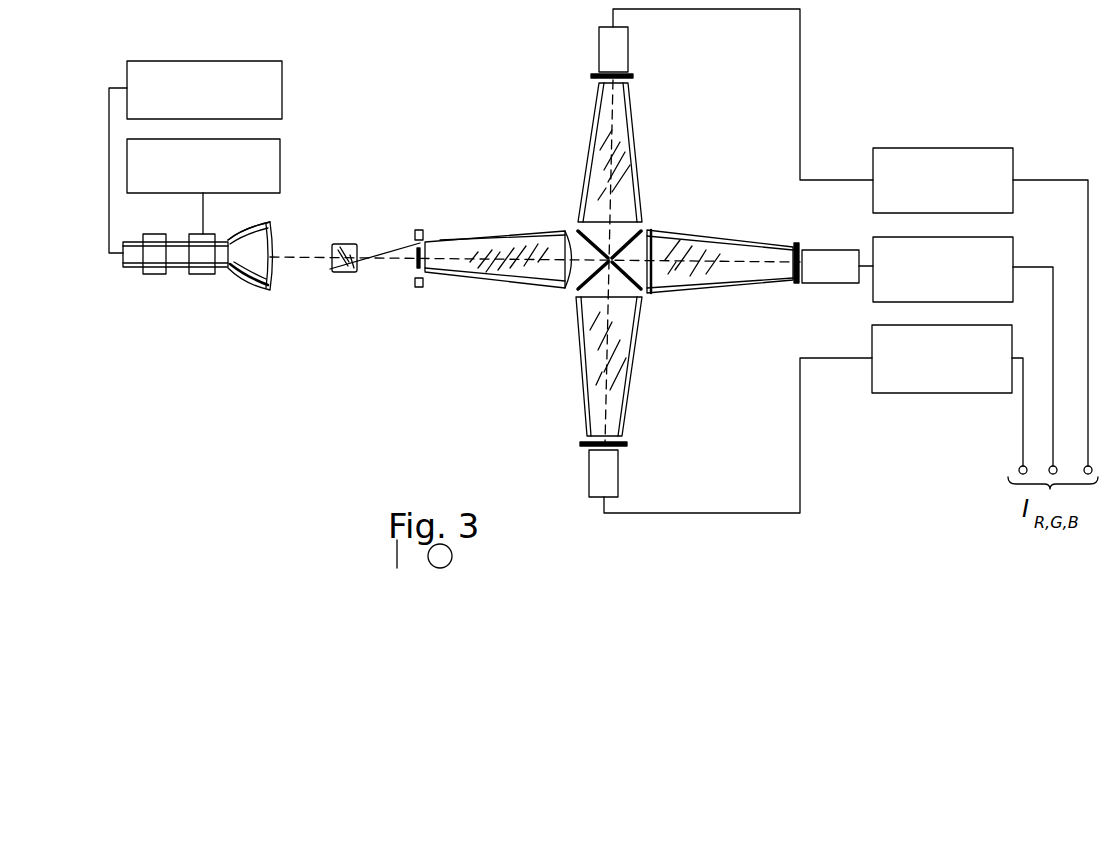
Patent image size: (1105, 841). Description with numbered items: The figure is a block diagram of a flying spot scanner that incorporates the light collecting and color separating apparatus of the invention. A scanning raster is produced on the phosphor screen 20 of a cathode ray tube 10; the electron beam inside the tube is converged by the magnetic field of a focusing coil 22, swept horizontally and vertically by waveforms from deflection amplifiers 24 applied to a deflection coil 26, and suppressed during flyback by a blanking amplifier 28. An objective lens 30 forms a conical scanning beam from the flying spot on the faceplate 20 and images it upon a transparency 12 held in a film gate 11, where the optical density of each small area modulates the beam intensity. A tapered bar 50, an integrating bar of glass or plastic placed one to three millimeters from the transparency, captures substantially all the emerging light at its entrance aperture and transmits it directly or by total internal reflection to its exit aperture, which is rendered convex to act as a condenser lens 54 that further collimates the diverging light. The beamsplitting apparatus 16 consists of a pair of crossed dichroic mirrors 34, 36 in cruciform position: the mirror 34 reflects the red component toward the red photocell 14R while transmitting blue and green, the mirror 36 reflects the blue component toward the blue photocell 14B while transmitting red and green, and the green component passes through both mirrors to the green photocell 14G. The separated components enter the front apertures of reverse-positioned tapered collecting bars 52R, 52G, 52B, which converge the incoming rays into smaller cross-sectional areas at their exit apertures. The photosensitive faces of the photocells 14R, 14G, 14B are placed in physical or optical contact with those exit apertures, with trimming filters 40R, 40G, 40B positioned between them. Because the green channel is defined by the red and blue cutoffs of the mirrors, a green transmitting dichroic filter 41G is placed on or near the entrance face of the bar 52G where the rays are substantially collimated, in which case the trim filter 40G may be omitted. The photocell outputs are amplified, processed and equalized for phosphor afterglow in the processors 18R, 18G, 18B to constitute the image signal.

The cathode ray tube 10 is at (243, 282).
The film gate 11 is at (414, 284).
The transparency 12 is at (413, 263).
The red photocell 14R is at (628, 32).
The green photocell 14G is at (825, 284).
The blue photocell 14B is at (618, 484).
The beamsplitting apparatus 16 is at (653, 200).
The red signal processor 18R is at (873, 151).
The green signal processor 18G is at (873, 243).
The blue signal processor 18B is at (872, 337).
The phosphor screen 20 is at (273, 240).
The focusing coil 22 is at (155, 273).
The deflection amplifiers 24 is at (280, 146).
The deflection coil 26 is at (205, 273).
The blanking amplifier 28 is at (282, 64).
The objective lens 30 is at (341, 244).
The dichroic mirror 34 is at (581, 304).
The dichroic mirror 36 is at (641, 306).
The red trimming filter 40R is at (633, 77).
The green trimming filter 40G is at (795, 243).
The blue trimming filter 40B is at (628, 444).
The green transmitting dichroic filter 41G is at (647, 231).
The tapered bar 50 is at (495, 239).
The red tapered collecting bar 52R is at (592, 152).
The green tapered collecting bar 52G is at (730, 226).
The blue tapered collecting bar 52B is at (585, 364).
The condenser lens 54 is at (573, 230).